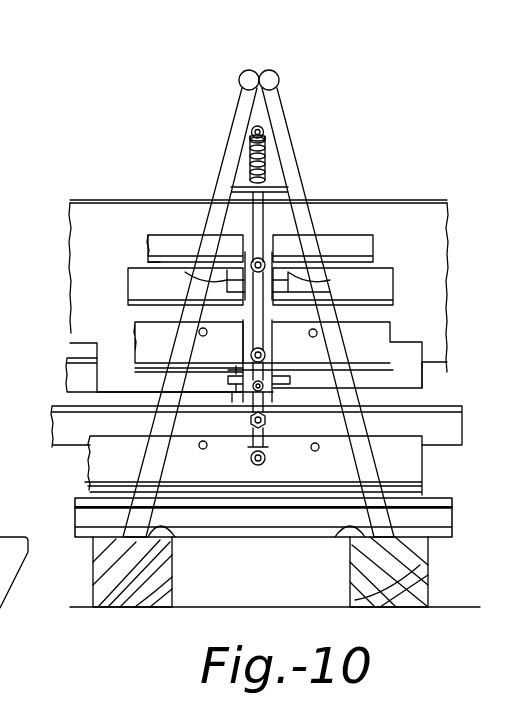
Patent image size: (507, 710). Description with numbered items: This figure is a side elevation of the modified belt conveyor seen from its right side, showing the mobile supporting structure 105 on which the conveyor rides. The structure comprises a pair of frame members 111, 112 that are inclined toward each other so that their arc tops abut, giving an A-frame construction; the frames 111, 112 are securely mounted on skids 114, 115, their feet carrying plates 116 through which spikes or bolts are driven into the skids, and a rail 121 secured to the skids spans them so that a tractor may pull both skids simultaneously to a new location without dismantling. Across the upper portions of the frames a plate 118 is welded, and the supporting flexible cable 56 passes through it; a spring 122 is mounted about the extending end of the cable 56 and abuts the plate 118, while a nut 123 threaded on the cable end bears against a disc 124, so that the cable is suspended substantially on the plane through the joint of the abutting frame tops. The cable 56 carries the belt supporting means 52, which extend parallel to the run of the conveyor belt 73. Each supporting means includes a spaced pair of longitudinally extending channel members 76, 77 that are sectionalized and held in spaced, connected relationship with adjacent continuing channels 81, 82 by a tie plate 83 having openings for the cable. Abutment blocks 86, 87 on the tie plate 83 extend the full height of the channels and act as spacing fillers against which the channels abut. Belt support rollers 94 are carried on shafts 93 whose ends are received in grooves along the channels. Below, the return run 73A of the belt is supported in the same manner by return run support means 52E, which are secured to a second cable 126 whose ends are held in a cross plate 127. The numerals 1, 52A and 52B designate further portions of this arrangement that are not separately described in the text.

The assembly 1 is at (30, 448).
The belt supporting means 52 is at (59, 370).
The plate 52A is at (128, 335).
The plate 52B is at (141, 253).
The return run support means 52E is at (82, 482).
The supporting flexible cable 56 is at (257, 244).
The conveyor belt 73 is at (71, 222).
The return run 73A is at (52, 419).
The channel member 76 is at (128, 274).
The channel member 77 is at (147, 240).
The channel 81 is at (393, 277).
The channel 82 is at (370, 240).
The tie plate 83 is at (266, 354).
The abutment block 86 is at (235, 372).
The abutment block 87 is at (235, 396).
The shaft 93 is at (318, 450).
The belt support roller 94 is at (330, 283).
The supporting structure 105 is at (412, 121).
The frame member 111 is at (240, 88).
The frame member 112 is at (278, 98).
The skid 114 is at (138, 603).
The skid 115 is at (402, 603).
The plate 116 is at (163, 539).
The plate 118 is at (286, 186).
The rail 121 is at (263, 540).
The spring 122 is at (250, 156).
The nut 123 is at (263, 130).
The disc 124 is at (266, 142).
The cable 126 is at (271, 447).
The cross plate 127 is at (193, 438).